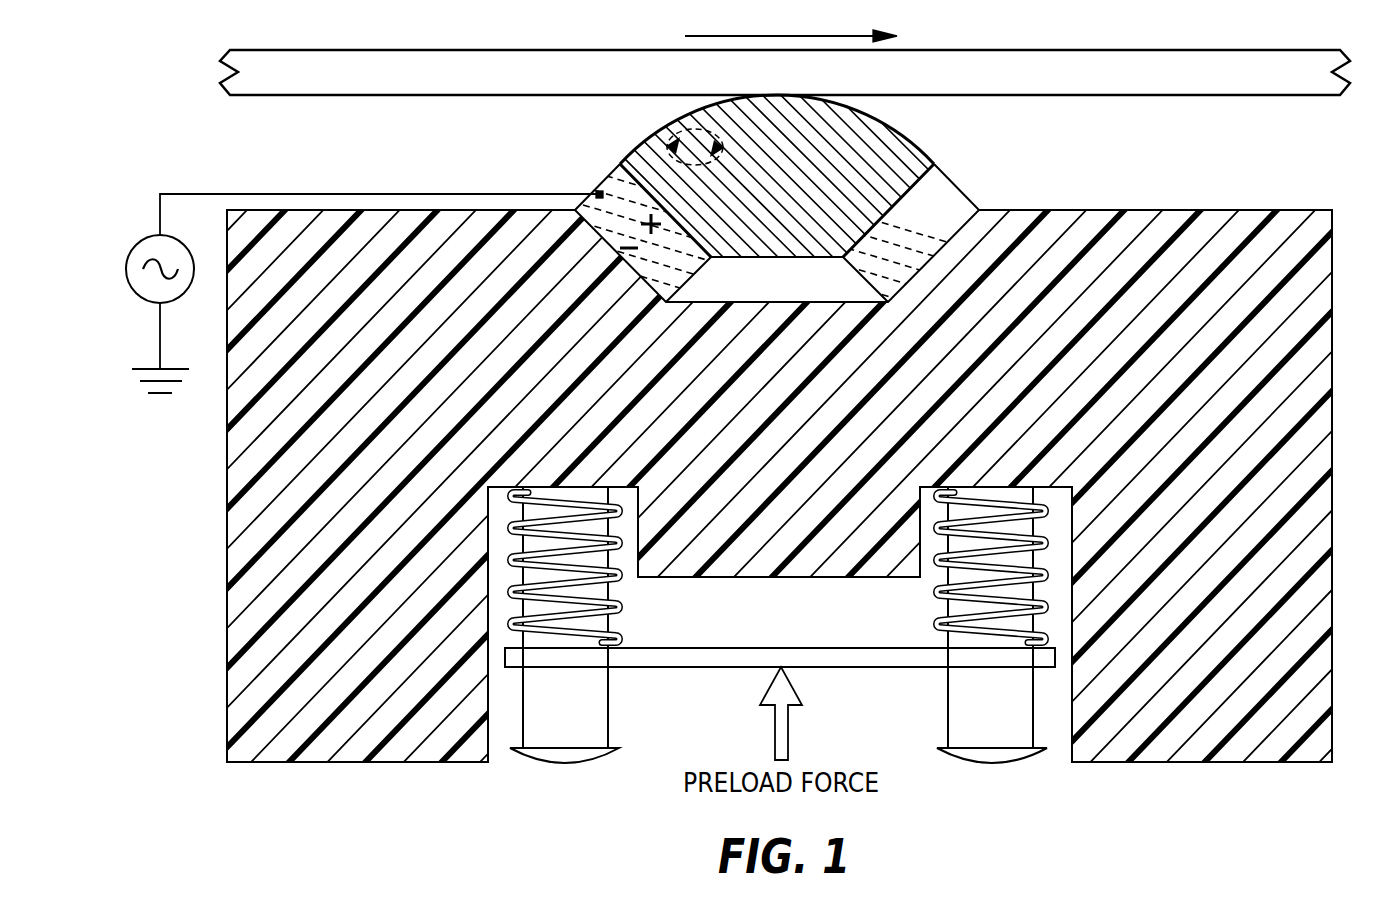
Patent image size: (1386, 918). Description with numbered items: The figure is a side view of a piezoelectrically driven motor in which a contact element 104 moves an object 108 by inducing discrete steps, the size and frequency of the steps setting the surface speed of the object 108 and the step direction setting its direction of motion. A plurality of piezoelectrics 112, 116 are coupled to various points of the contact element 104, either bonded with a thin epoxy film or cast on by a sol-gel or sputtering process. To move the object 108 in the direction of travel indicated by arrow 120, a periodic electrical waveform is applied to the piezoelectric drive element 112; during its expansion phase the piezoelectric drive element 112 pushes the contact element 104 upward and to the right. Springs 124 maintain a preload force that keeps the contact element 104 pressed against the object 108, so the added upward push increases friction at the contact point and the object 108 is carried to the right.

The contact element 104 is at (908, 157).
The object 108 is at (1043, 57).
The piezoelectric drive element 112 is at (615, 178).
The piezoelectric 116 is at (957, 197).
The arrow 120 is at (755, 35).
The springs 124 is at (620, 643).